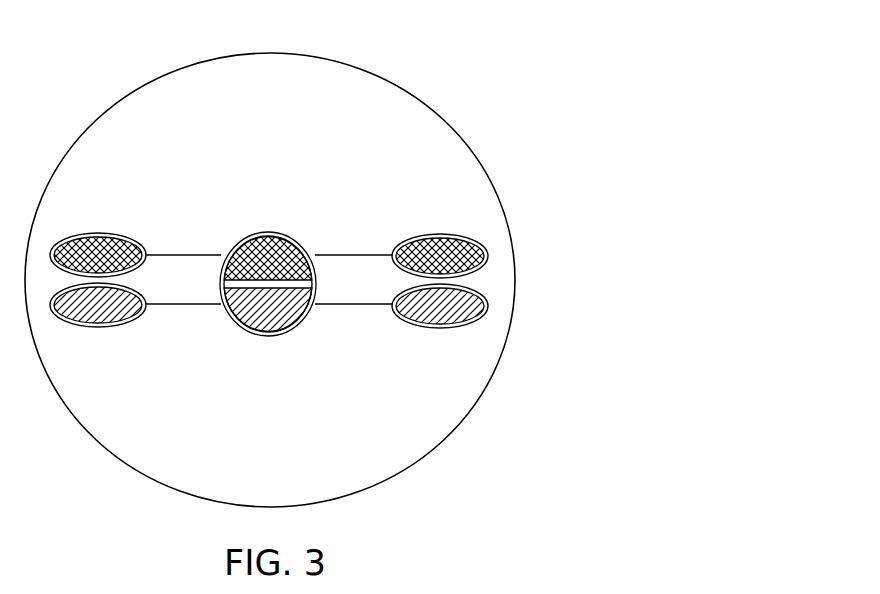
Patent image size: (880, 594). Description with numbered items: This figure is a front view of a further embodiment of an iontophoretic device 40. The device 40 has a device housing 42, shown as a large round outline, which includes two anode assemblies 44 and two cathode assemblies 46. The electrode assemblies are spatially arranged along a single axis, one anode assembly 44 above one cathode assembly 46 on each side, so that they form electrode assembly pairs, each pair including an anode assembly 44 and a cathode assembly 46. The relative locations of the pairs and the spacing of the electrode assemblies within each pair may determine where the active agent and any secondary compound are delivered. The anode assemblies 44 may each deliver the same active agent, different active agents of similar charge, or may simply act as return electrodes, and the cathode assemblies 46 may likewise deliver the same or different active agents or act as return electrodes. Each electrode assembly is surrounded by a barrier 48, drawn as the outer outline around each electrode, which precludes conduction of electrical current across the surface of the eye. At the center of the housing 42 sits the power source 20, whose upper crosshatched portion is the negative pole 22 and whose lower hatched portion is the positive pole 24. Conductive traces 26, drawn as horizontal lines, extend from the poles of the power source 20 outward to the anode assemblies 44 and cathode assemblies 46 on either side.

The power source 20 is at (277, 280).
The negative pole 22 is at (287, 237).
The positive pole 24 is at (247, 330).
The conductive traces 26 is at (208, 254).
The iontophoretic device 40 is at (443, 53).
The device housing 42 is at (445, 120).
The anode assembly 44 is at (473, 240).
The cathode assembly 46 is at (475, 320).
The barrier 48 is at (493, 287).